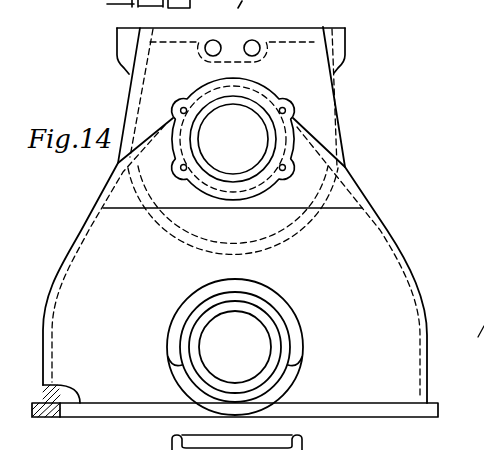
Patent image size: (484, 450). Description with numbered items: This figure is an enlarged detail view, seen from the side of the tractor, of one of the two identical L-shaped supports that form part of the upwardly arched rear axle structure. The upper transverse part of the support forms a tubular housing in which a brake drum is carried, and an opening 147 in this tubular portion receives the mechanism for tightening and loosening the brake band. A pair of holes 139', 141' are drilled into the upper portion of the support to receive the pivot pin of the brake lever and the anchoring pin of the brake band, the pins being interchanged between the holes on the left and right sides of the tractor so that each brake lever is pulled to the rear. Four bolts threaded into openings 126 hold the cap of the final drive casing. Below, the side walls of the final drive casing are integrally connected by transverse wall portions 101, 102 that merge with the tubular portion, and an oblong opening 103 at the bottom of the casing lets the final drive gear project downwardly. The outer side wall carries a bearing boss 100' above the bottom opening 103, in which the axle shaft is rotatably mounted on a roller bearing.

The opening 147 is at (298, 30).
The hole 139' is at (210, 32).
The hole 141' is at (262, 30).
The openings 126 is at (284, 105).
The transverse wall portion 102 is at (72, 247).
The transverse wall portion 101 is at (406, 260).
The bearing boss 100' is at (249, 347).
The oblong opening 103 is at (70, 413).